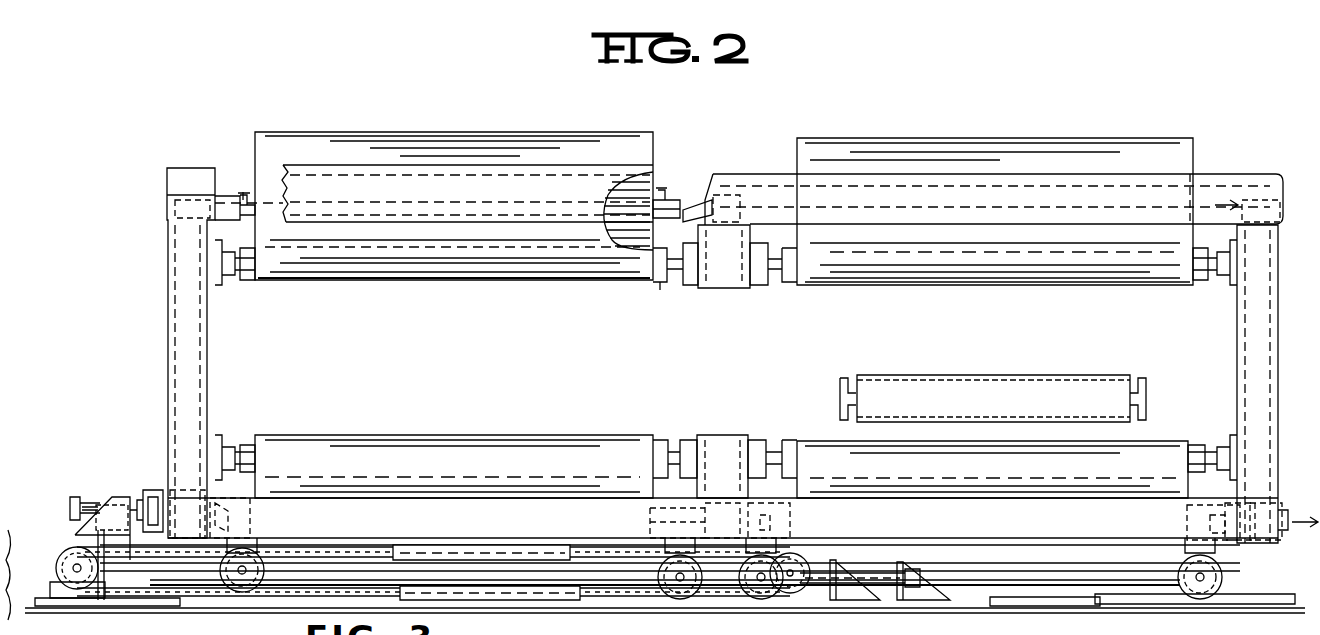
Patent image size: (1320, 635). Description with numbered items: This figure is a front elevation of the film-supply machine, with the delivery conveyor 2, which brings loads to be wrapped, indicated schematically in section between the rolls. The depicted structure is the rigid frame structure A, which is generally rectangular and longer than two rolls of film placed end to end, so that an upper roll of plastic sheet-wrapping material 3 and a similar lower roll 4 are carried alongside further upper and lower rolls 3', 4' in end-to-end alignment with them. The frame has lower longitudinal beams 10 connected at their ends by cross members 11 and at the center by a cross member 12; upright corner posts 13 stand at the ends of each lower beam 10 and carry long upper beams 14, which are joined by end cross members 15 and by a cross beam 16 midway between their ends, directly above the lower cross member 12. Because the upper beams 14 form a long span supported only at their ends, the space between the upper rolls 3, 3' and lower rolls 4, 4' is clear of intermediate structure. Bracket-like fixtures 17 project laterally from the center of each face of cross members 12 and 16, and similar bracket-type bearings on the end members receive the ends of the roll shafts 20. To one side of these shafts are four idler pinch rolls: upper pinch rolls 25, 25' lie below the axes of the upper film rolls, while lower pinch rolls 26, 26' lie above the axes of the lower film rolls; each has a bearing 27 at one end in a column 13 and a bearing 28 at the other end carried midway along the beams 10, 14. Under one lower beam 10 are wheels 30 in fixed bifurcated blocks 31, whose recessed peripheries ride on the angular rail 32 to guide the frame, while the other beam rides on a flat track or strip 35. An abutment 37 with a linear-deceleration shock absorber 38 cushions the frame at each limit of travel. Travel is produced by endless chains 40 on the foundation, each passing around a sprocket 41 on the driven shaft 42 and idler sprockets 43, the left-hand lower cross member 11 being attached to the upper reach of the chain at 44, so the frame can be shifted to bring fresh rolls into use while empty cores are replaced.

The rigid frame structure A is at (160, 324).
The delivery conveyor 2 is at (983, 374).
The upper roll of plastic sheet-wrapping material 3 is at (995, 192).
The upper roll of film 3' is at (434, 188).
The lower roll of plastic sheet-wrapping material 4 is at (992, 453).
The lower roll of film 4' is at (454, 448).
The lower longitudinal beam 10 is at (1030, 512).
The end cross member 11 is at (175, 492).
The center cross member 12 is at (720, 503).
The upright corner post 13 is at (182, 378).
The upper beam 14 is at (840, 186).
The upper end cross member 15 is at (166, 203).
The upper cross beam 16 is at (735, 192).
The bracket-like fixture 17 is at (692, 198).
The roll shaft 20 is at (668, 200).
The upper idler pinch roll 25 is at (793, 286).
The upper idler pinch roll 25' is at (647, 286).
The lower idler pinch roll 26 is at (792, 439).
The lower idler pinch roll 26' is at (659, 438).
The pinch roll bearing 27 is at (238, 284).
The pinch roll bearing 28 is at (690, 286).
The wheel 30 is at (685, 600).
The fixed bifurcated block 31 is at (672, 598).
The angular rail 32 is at (1280, 594).
The flat track or strip 35 is at (160, 606).
The abutment 37 is at (143, 495).
The shock absorber 38 is at (88, 497).
The endless chain 40 is at (335, 545).
The sprocket 41 is at (101, 600).
The driven shaft 42 is at (74, 560).
The idler sprocket 43 is at (808, 562).
The chain attachment 44 is at (218, 560).